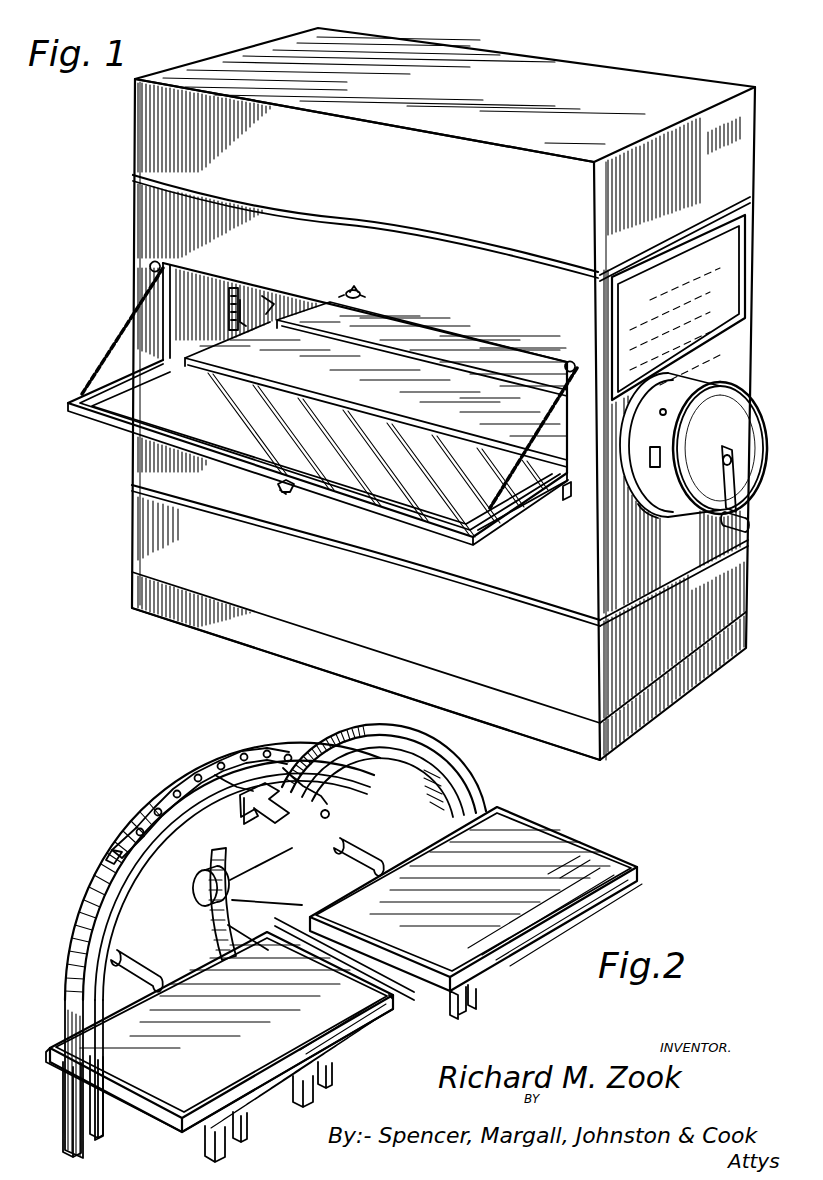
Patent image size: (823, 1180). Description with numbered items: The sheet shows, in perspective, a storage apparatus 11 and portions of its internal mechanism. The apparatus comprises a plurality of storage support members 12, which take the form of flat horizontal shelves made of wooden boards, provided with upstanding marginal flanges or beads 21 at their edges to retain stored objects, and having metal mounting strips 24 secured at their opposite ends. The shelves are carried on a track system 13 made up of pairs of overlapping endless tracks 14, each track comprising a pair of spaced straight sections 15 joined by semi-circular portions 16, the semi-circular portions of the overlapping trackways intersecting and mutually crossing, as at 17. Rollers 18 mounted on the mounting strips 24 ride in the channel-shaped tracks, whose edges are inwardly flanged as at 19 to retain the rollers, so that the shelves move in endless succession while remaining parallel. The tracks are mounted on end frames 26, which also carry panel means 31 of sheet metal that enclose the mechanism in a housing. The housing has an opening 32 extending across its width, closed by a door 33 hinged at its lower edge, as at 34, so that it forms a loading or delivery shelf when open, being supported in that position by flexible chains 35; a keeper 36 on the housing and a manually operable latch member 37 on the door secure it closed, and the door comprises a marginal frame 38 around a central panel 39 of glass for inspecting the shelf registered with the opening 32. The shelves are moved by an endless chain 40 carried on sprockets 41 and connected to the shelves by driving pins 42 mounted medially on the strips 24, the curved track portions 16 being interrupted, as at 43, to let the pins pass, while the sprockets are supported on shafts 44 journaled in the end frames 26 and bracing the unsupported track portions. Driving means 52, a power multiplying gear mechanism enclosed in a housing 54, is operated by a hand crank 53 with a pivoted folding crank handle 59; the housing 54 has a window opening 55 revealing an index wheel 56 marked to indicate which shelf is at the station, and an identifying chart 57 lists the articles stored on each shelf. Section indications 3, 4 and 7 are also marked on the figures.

In FIG. 1, the section line 3 is at (605, 458).
In FIG. 2, the section line 4 is at (316, 926).
In FIG. 1, the section line 7 is at (158, 233).
In FIG. 1, the storage apparatus 11 is at (130, 291).
In FIG. 2, the storage apparatus 11 is at (145, 790).
In FIG. 1, the storage support member 12 is at (376, 394).
In FIG. 2, the storage support member 12 is at (585, 858).
In FIG. 2, the track system 13 is at (75, 930).
In FIG. 2, the endless track 14 is at (456, 748).
In FIG. 1, the straight section 15 is at (276, 296).
In FIG. 2, the straight section 15 is at (472, 995).
In FIG. 2, the semi-circular portion 16 is at (128, 832).
In FIG. 2, the track crossing 17 is at (240, 796).
In FIG. 2, the roller 18 is at (218, 934).
In FIG. 2, the inward flange 19 is at (408, 757).
In FIG. 2, the marginal flange or bead 21 is at (626, 870).
In FIG. 2, the metal mounting strip 24 is at (497, 810).
In FIG. 1, the end frame 26 is at (244, 292).
In FIG. 1, the panel means 31 is at (150, 526).
In FIG. 1, the opening 32 is at (538, 360).
In FIG. 1, the door 33 is at (511, 510).
In FIG. 1, the hinge 34 is at (568, 496).
In FIG. 1, the flexible chain 35 is at (545, 425).
In FIG. 1, the keeper 36 is at (355, 290).
In FIG. 1, the latch member 37 is at (288, 492).
In FIG. 1, the marginal frame 38 is at (102, 420).
In FIG. 1, the central panel 39 is at (340, 450).
In FIG. 1, the endless chain 40 is at (232, 288).
In FIG. 2, the endless chain 40 is at (108, 848).
In FIG. 2, the sprocket 41 is at (193, 792).
In FIG. 2, the driving pin 42 is at (352, 845).
In FIG. 2, the track interruption 43 is at (238, 768).
In FIG. 2, the shaft 44 is at (378, 954).
In FIG. 1, the driving means 52 is at (725, 378).
In FIG. 1, the hand crank 53 is at (716, 478).
In FIG. 1, the housing 54 is at (652, 512).
In FIG. 1, the window opening 55 is at (678, 436).
In FIG. 1, the index wheel 56 is at (650, 450).
In FIG. 1, the identifying chart 57 is at (714, 216).
In FIG. 1, the crank handle 59 is at (726, 528).